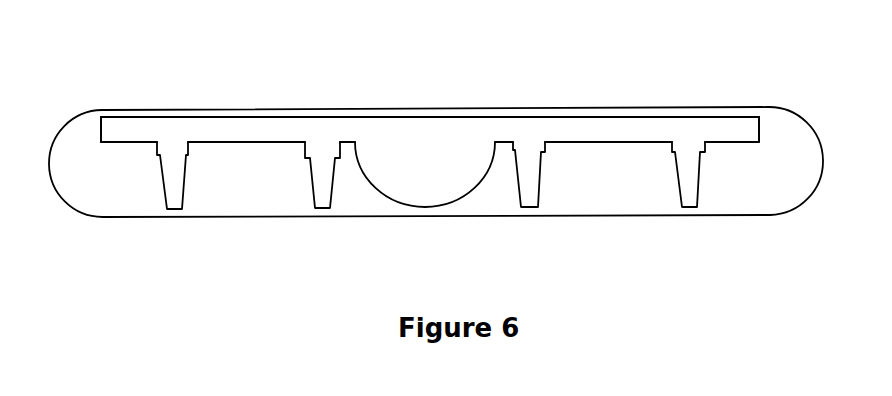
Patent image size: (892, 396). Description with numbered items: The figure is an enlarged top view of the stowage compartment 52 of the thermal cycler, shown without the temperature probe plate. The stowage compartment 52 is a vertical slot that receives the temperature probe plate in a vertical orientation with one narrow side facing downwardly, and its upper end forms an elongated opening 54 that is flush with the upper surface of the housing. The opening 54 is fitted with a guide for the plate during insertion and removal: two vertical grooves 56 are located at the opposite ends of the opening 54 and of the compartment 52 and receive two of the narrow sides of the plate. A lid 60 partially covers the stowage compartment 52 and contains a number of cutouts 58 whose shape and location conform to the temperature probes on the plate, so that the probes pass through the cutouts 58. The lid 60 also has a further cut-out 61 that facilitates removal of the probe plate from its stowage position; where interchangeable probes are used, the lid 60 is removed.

The stowage compartment 52 is at (470, 128).
The opening 54 is at (407, 128).
The vertical grooves 56 is at (117, 130).
The cutouts 58 is at (173, 176).
The lid 60 is at (248, 157).
The further cut-out 61 is at (400, 178).